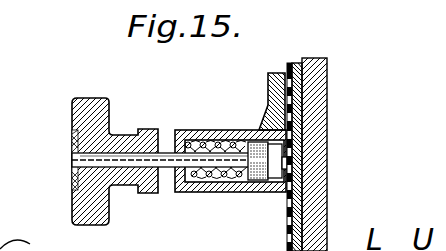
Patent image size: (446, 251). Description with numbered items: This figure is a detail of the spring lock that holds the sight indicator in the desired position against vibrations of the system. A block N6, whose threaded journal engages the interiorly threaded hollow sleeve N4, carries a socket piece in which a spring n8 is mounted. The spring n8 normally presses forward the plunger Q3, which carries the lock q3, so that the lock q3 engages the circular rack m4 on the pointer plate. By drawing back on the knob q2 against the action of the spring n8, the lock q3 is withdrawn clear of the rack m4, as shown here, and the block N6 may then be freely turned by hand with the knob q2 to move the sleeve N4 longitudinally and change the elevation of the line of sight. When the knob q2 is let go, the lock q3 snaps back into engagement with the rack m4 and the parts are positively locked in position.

The knob q2 is at (77, 100).
The hollow sleeve N4 is at (184, 130).
The block N6 is at (268, 79).
The circular rack m4 is at (292, 116).
The lock q3 is at (283, 158).
The spring n8 is at (200, 191).
The plunger Q3 is at (258, 191).